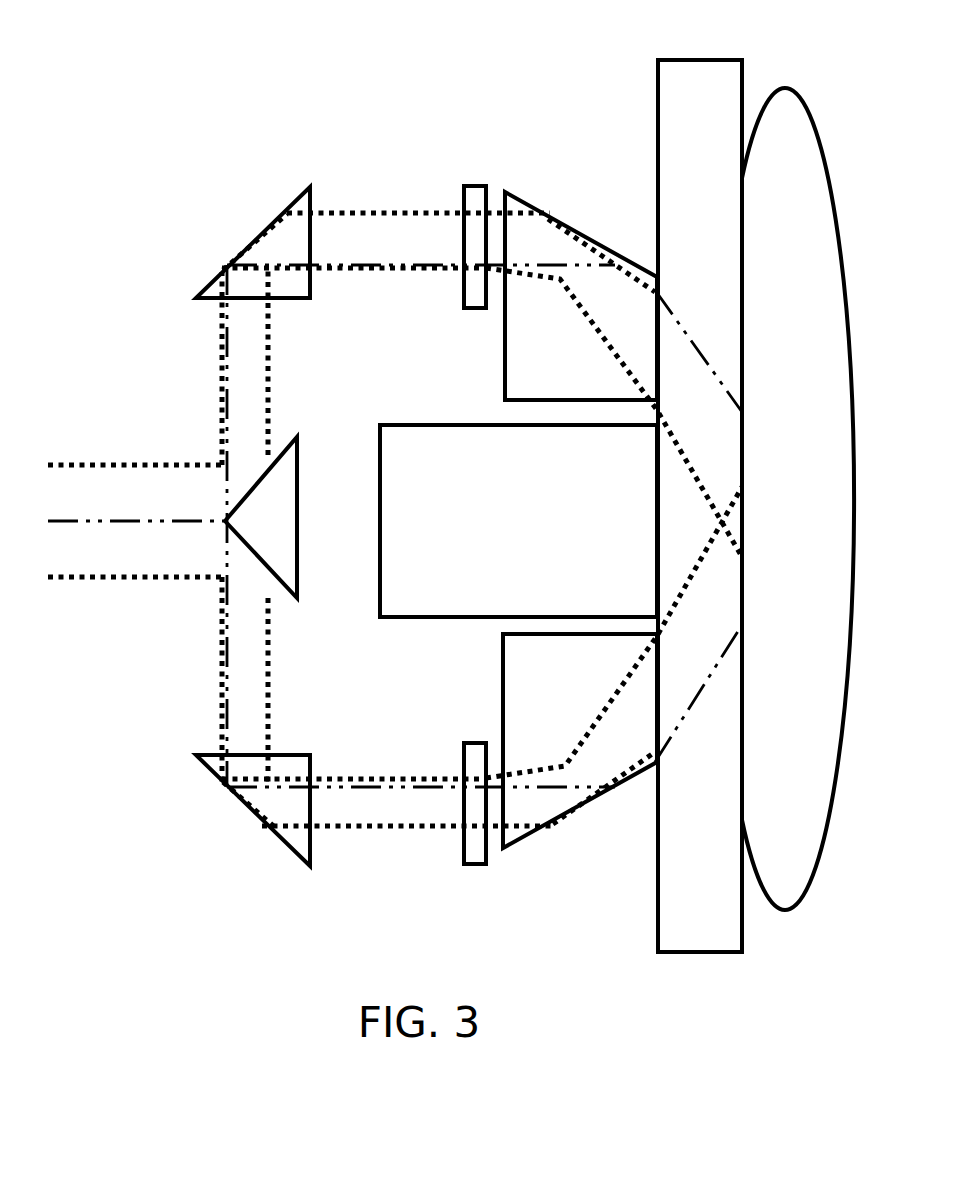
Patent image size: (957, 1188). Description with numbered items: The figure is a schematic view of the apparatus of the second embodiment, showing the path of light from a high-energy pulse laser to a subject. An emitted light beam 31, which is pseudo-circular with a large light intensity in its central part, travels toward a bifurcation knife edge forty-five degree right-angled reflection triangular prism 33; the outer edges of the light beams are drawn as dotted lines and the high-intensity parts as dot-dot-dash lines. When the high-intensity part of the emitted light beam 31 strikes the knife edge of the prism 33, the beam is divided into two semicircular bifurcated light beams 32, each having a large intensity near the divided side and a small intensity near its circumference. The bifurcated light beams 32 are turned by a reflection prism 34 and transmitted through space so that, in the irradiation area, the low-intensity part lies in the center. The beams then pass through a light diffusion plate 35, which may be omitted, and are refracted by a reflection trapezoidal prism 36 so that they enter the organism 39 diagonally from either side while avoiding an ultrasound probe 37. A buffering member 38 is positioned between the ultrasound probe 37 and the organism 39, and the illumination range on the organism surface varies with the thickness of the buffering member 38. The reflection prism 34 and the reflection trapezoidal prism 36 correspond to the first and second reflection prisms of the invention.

The emitted light beam 31 is at (143, 493).
The bifurcated light beams 32 is at (240, 422).
The bifurcation knife edge 45 degree right-angled reflection triangular prism 33 is at (282, 550).
The reflection prism 34 is at (310, 187).
The light diffusion plate 35 is at (475, 185).
The reflection trapezoidal prism 36 is at (557, 242).
The ultrasound probe 37 is at (463, 480).
The buffering member 38 is at (686, 187).
The organism 39 is at (812, 185).